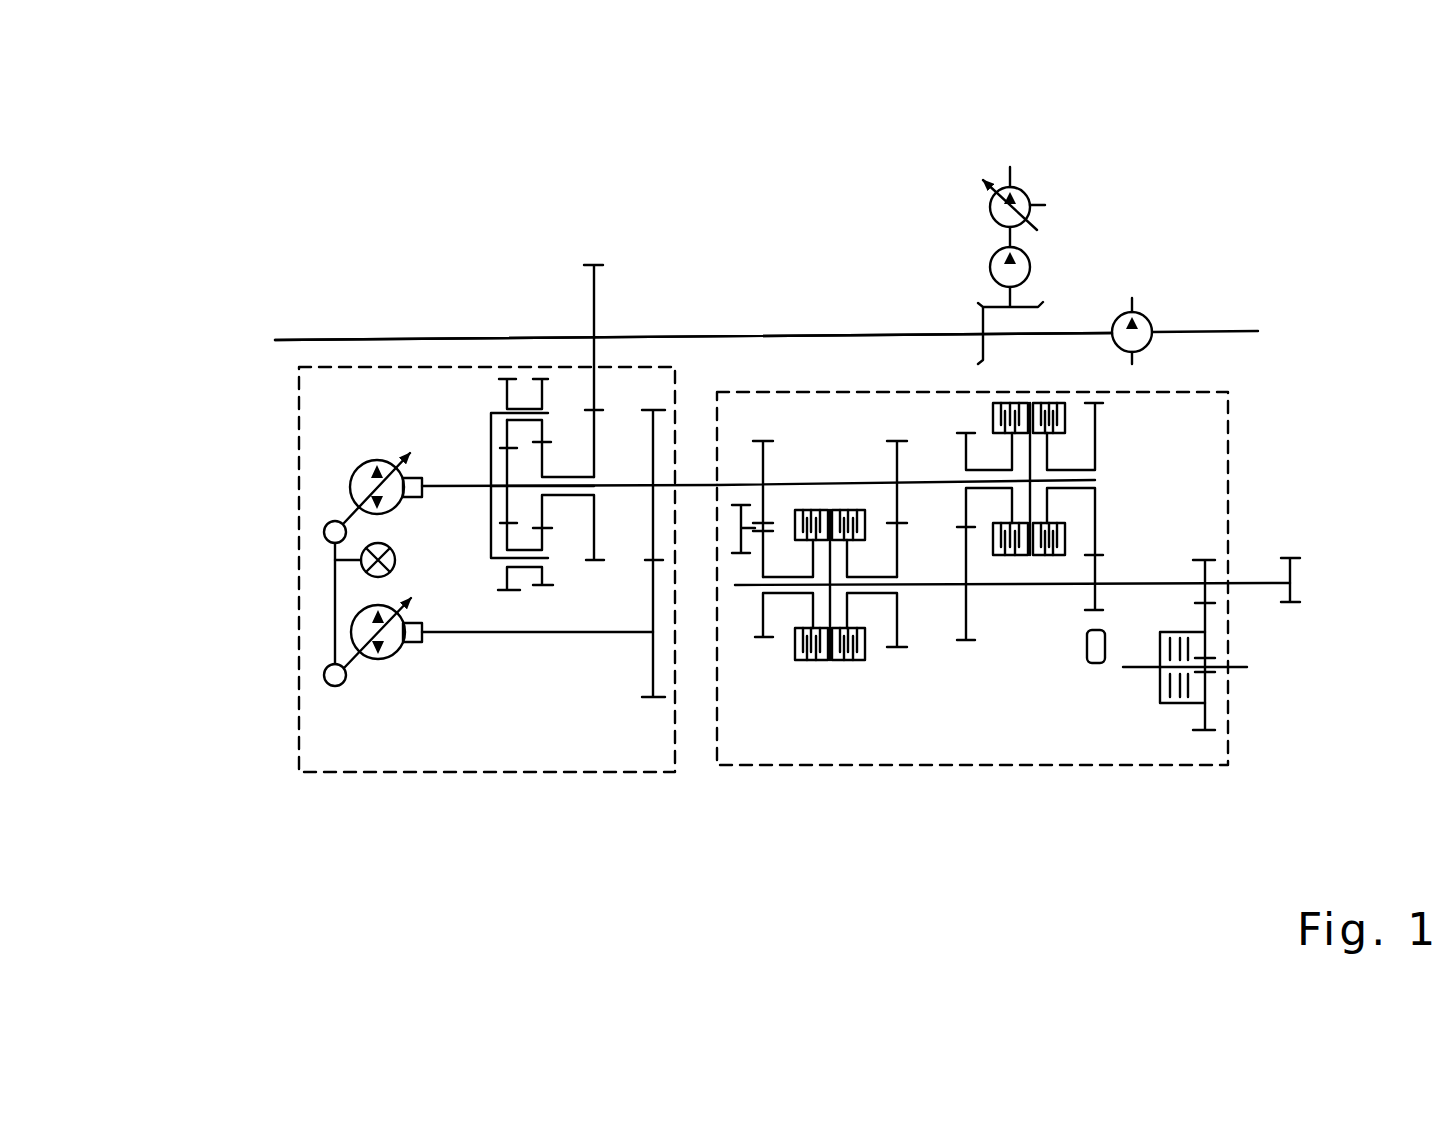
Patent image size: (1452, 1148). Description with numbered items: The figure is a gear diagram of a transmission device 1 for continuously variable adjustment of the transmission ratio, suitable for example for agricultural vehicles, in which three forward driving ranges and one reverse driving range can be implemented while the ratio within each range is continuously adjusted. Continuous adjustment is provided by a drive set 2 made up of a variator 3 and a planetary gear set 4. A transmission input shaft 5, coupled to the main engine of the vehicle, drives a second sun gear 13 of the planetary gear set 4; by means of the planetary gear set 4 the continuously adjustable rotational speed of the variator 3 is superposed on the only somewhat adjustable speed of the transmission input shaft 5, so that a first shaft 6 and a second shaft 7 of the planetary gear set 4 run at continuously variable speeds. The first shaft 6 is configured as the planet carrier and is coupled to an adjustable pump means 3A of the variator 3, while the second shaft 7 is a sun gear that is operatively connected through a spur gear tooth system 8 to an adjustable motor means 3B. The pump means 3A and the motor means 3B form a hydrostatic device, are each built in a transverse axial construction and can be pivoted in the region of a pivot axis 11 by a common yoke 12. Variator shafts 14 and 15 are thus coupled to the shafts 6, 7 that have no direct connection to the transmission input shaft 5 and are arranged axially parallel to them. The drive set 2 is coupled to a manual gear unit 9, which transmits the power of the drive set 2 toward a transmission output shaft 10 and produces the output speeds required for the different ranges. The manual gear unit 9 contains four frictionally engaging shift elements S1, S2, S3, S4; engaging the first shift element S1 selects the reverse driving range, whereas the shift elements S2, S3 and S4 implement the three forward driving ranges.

The transmission device 1 is at (376, 296).
The drive set 2 is at (464, 781).
The variator 3 is at (276, 554).
The adjustable pump means 3A is at (350, 483).
The adjustable motor means 3B is at (352, 634).
The planetary gear set 4 is at (554, 363).
The transmission input shaft 5 is at (527, 338).
The first shaft 6 is at (498, 412).
The second shaft 7 is at (533, 487).
The spur gear tooth system 8 is at (661, 586).
The manual gear unit 9 is at (972, 777).
The transmission output shaft 10 is at (1250, 583).
The pivot axis 11 is at (337, 562).
The common yoke 12 is at (337, 620).
The second sun gear 13 is at (596, 442).
The variator shaft 14 is at (452, 486).
The variator shaft 15 is at (594, 632).
The first shift element S1 is at (809, 498).
The second shift element S2 is at (846, 498).
The third shift element S3 is at (979, 402).
The fourth shift element S4 is at (1053, 384).